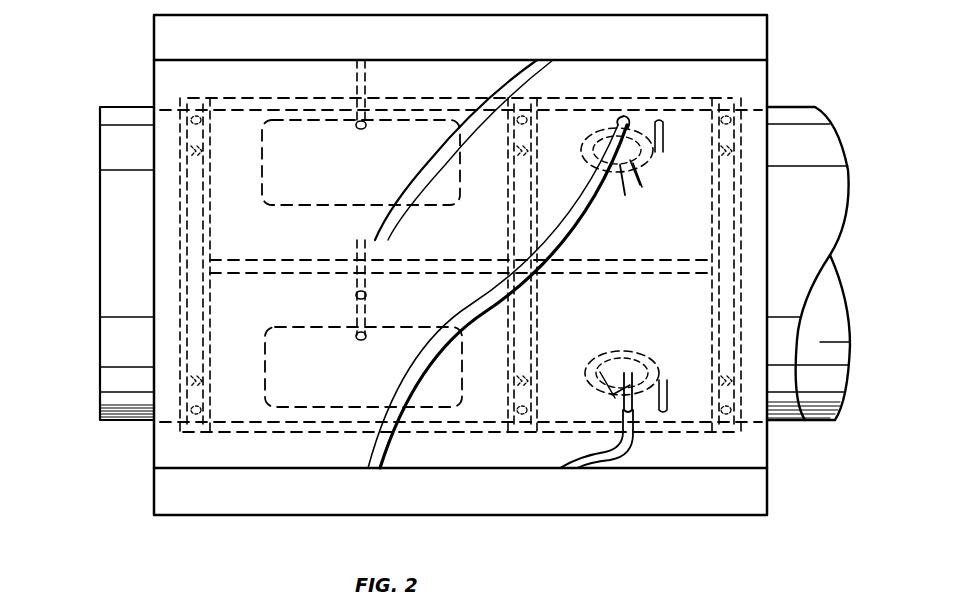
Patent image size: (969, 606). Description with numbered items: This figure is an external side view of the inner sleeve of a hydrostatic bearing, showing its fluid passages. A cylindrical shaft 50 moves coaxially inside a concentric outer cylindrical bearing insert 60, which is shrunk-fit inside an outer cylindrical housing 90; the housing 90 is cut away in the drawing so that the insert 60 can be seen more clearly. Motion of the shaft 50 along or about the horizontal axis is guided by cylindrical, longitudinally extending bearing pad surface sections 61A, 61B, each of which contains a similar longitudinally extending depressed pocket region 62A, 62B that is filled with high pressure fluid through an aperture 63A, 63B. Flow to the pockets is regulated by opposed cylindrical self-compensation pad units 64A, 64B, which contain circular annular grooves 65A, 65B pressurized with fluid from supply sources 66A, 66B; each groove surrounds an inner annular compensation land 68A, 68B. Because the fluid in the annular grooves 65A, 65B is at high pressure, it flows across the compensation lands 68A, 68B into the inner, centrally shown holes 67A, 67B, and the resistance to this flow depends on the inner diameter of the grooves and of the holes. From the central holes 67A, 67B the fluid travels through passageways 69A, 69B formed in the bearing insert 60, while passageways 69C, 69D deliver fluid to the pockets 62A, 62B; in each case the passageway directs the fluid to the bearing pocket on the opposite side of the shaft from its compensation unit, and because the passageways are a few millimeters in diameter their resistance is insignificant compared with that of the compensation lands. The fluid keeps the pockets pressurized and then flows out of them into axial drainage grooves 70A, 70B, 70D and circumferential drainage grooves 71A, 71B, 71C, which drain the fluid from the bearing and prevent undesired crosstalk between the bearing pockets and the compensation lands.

The outer cylindrical housing 90 is at (163, 32).
The outer cylindrical bearing insert 60 is at (180, 76).
The cylindrical shaft 50 is at (106, 118).
The bearing pad surface section 61A is at (232, 168).
The bearing pad surface section 61B is at (236, 352).
The depressed pocket region 62A is at (290, 205).
The depressed pocket region 62B is at (292, 330).
The aperture 63A is at (362, 130).
The aperture 63B is at (362, 341).
The self-compensation pad unit 64A is at (690, 130).
The self-compensation pad unit 64B is at (690, 420).
The circular annular groove 65A is at (648, 170).
The circular annular groove 65B is at (622, 360).
The supply source 66A is at (652, 160).
The supply source 66B is at (665, 382).
The central hole 67A is at (640, 200).
The central hole 67B is at (618, 370).
The annular compensation land 68A is at (628, 200).
The annular compensation land 68B is at (610, 393).
The passageway 69A is at (497, 296).
The passageway 69B is at (578, 452).
The passageway 69C is at (380, 48).
The passageway 69D is at (492, 89).
The axial drainage groove 70A is at (270, 272).
The axial drainage groove 70B is at (268, 433).
The axial drainage groove 70D is at (272, 100).
The circumferential drainage groove 71A is at (190, 168).
The circumferential drainage groove 71B is at (512, 212).
The circumferential drainage groove 71C is at (730, 136).